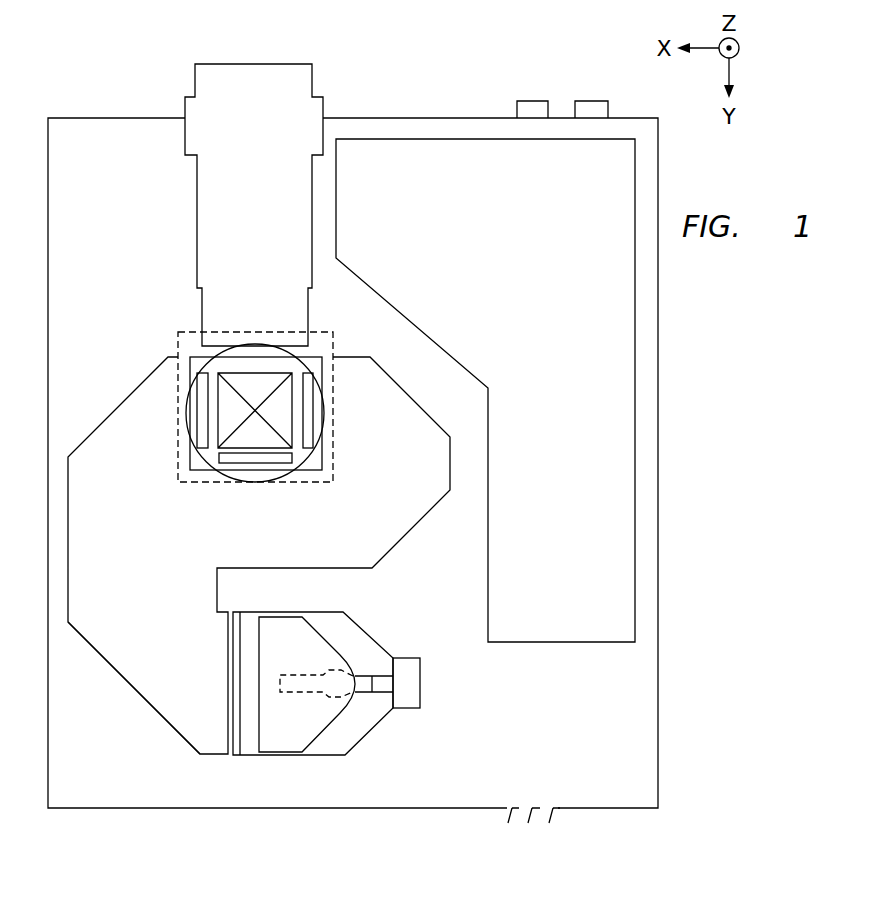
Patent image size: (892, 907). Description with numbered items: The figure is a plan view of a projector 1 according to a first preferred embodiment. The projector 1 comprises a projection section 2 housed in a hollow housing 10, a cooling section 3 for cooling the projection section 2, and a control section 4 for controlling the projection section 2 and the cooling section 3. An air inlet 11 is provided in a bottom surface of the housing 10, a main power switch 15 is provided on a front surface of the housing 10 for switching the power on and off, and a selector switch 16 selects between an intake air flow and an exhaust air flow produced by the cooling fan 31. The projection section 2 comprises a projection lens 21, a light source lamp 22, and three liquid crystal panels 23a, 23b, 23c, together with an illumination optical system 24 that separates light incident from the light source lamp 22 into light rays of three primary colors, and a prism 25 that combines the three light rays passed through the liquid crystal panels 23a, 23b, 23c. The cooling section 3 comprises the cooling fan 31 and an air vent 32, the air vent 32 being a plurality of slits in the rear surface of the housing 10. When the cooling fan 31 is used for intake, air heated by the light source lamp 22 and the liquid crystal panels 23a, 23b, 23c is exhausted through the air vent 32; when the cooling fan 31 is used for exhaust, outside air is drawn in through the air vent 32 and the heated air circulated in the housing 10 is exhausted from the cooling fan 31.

The projector 1 is at (57, 66).
The projection section 2 is at (134, 268).
The cooling section 3 is at (183, 514).
The control section 4 is at (625, 380).
The housing 10 is at (178, 808).
The air inlet 11 is at (258, 343).
The main power switch 15 is at (590, 101).
The selector switch 16 is at (531, 101).
The projection lens 21 is at (253, 63).
The light source lamp 22 is at (280, 754).
The liquid crystal panel 23a is at (201, 424).
The liquid crystal panel 23b is at (255, 458).
The liquid crystal panel 23c is at (312, 428).
The illumination optical system 24 is at (133, 690).
The prism 25 is at (248, 378).
The cooling fan 31 is at (178, 474).
The air vent 32 is at (541, 834).